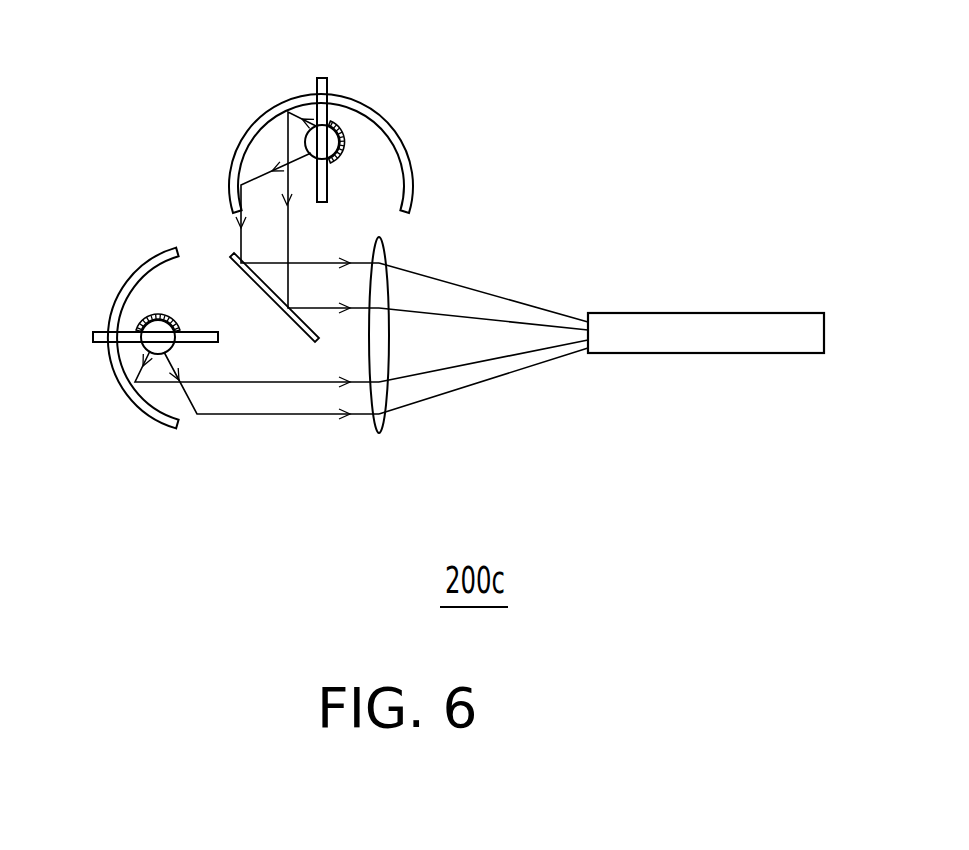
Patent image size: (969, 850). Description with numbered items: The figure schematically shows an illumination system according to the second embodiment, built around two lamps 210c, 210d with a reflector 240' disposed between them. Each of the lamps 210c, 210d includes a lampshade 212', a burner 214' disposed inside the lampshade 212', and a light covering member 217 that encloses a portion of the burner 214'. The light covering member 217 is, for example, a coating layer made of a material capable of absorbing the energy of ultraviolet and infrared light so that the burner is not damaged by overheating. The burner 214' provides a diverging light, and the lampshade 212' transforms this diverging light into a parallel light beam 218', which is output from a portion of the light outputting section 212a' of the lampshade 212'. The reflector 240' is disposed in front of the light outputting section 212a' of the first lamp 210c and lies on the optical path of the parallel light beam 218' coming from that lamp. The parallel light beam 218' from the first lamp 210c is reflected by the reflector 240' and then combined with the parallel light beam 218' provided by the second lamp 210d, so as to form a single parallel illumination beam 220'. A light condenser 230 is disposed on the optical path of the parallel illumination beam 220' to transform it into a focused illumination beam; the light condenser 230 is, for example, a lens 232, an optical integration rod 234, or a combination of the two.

The lamp 210c is at (419, 132).
The lamp 210d is at (133, 403).
The lampshade 212' is at (372, 153).
The light outputting section 212a' is at (384, 217).
The burner 214' is at (410, 116).
The light covering member 217 is at (338, 121).
The parallel light beam 218' is at (221, 329).
The parallel illumination beam 220' is at (366, 484).
The light condenser 230 is at (596, 387).
The lens 232 is at (378, 403).
The optical integration rod 234 is at (625, 345).
The reflector 240' is at (191, 269).